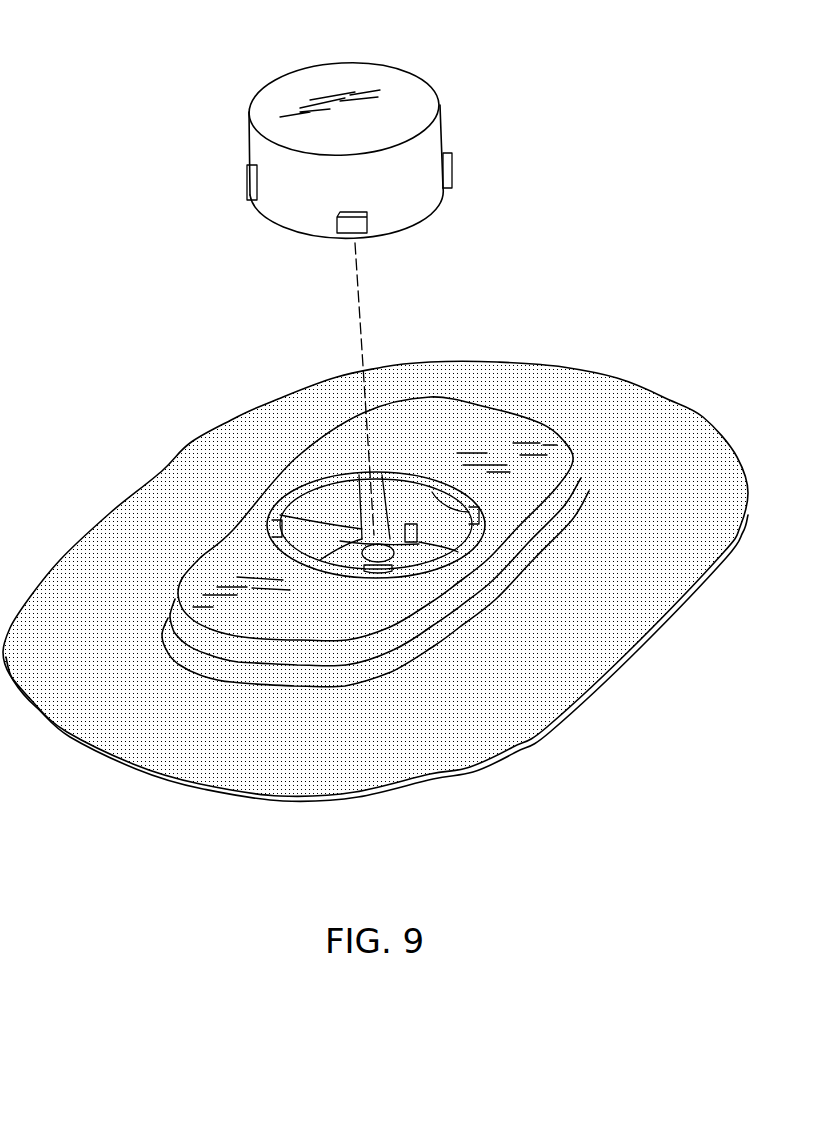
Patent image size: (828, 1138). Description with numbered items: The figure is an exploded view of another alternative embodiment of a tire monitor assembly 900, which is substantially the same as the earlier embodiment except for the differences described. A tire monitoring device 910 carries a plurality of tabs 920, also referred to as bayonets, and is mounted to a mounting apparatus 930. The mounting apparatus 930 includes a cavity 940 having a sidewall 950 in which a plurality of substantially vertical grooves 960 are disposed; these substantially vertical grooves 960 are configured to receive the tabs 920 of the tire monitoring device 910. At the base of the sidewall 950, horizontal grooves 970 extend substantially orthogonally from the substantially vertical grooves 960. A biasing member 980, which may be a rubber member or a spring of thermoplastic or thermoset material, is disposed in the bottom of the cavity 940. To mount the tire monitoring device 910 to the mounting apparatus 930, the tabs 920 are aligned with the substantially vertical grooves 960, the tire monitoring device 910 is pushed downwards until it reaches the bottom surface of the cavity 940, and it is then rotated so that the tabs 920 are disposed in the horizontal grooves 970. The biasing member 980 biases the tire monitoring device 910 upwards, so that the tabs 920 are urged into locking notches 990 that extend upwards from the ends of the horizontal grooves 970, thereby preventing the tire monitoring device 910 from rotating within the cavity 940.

The tire monitor assembly 900 is at (112, 64).
The tire monitoring device 910 is at (398, 85).
The tabs 920 is at (444, 156).
The mounting apparatus 930 is at (455, 741).
The cavity 940 is at (314, 505).
The sidewall 950 is at (432, 490).
The substantially vertical grooves 960 is at (367, 474).
The horizontal grooves 970 is at (390, 540).
The biasing member 980 is at (262, 507).
The locking notches 990 is at (448, 538).